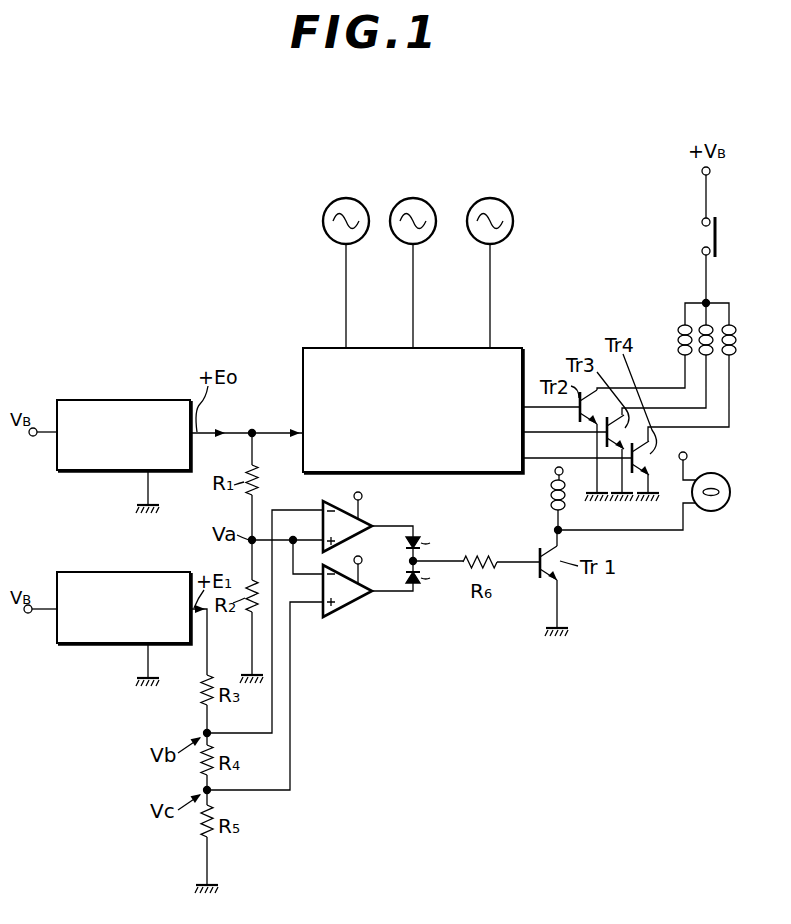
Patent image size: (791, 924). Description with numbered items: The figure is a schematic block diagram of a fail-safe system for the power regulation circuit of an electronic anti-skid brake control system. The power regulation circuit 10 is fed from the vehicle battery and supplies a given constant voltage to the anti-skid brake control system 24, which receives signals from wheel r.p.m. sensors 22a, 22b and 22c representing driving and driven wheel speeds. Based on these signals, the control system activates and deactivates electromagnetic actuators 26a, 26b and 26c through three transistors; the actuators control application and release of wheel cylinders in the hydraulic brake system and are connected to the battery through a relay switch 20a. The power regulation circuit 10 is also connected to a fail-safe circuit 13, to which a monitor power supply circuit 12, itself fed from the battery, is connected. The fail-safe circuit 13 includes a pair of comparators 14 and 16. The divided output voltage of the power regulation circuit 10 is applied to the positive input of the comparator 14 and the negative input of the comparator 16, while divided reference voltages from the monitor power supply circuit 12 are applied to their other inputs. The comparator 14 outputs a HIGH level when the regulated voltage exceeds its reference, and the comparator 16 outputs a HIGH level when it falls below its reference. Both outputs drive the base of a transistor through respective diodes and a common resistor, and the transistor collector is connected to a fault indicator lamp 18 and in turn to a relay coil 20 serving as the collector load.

The power regulation circuit 10 is at (129, 400).
The monitor power supply circuit 12 is at (122, 572).
The fail-safe circuit 13 is at (418, 616).
The comparator 14 is at (324, 500).
The comparator 16 is at (356, 608).
The fault indicator lamp 18 is at (722, 508).
The relay coil 20 is at (549, 507).
The relay switch 20a is at (708, 239).
The wheel r.p.m. sensor 22a is at (346, 198).
The wheel r.p.m. sensor 22b is at (413, 198).
The wheel r.p.m. sensor 22c is at (490, 198).
The anti-skid brake control system 24 is at (303, 359).
The electromagnetic actuator 26a is at (680, 334).
The electromagnetic actuator 26b is at (703, 326).
The electromagnetic actuator 26c is at (726, 324).